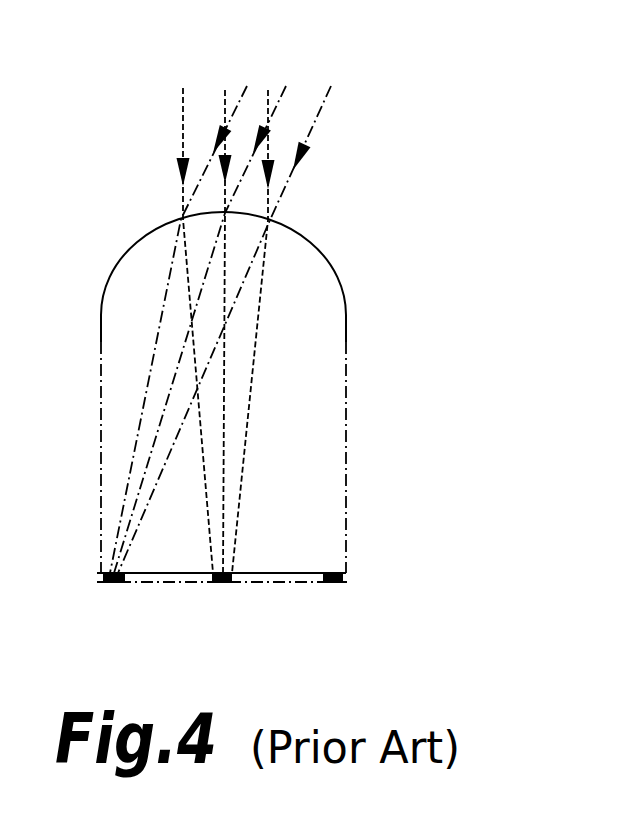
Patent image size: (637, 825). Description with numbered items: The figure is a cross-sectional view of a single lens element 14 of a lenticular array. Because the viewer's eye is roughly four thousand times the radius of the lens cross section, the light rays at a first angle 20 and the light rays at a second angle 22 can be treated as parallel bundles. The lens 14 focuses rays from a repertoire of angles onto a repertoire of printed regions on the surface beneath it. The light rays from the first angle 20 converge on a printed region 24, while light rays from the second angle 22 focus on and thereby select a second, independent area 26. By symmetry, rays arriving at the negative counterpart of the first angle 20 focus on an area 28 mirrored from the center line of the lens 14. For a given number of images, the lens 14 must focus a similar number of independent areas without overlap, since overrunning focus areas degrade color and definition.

The lens element 14 is at (332, 270).
The light rays at a first angle 20 is at (331, 86).
The light rays at a second angle 22 is at (268, 90).
The printed region 24 is at (110, 583).
The second independent area 26 is at (220, 585).
The mirrored area 28 is at (328, 587).